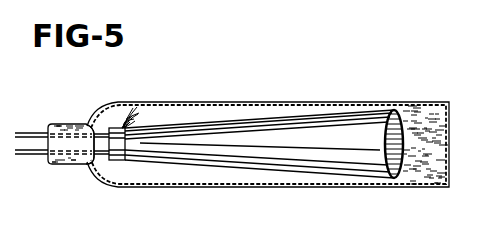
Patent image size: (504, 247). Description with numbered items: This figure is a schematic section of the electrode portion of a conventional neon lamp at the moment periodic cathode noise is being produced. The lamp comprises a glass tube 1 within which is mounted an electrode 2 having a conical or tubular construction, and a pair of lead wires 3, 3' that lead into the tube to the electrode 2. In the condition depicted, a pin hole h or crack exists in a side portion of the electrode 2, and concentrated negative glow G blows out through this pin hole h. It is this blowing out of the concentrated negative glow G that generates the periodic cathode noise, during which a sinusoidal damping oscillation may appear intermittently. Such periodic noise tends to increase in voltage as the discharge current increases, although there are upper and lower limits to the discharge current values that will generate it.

The glass tube 1 is at (441, 102).
The electrode 2 is at (361, 158).
The lead wire 3 is at (54, 111).
The lead wire 3' is at (83, 169).
The negative glow G is at (153, 108).
The pin hole h is at (132, 128).